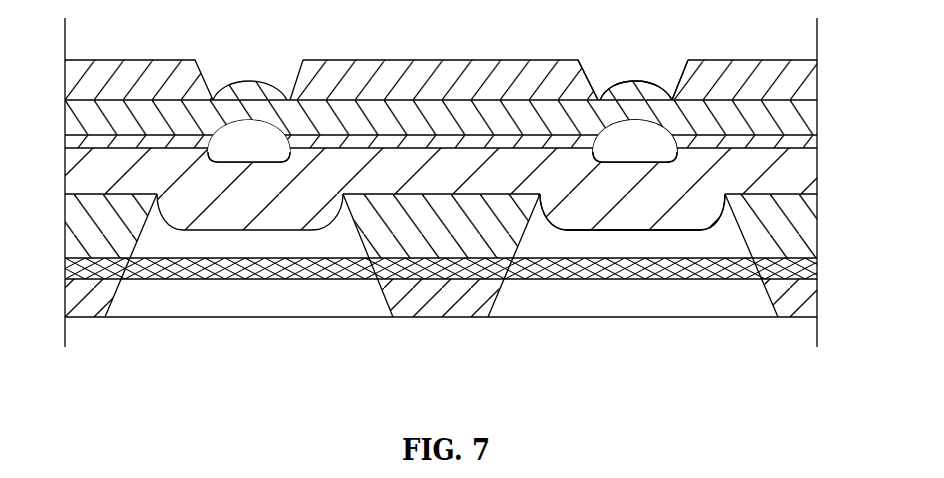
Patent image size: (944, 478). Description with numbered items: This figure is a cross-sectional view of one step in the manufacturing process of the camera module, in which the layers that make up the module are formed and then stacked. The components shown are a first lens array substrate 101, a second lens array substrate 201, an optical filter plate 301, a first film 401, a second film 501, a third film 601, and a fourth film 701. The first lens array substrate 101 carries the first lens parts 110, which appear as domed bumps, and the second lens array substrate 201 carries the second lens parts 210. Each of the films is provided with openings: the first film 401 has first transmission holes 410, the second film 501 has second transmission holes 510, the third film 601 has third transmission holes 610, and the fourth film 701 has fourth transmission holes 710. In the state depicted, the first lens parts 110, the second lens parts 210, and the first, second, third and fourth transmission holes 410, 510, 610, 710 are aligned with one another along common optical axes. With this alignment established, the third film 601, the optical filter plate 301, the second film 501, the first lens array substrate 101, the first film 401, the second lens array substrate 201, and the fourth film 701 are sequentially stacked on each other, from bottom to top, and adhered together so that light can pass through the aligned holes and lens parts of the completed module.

The first lens array substrate 101 is at (810, 185).
The first lens parts 110 is at (604, 210).
The second lens array substrate 201 is at (810, 115).
The second lens parts 210 is at (638, 80).
The optical filter plate 301 is at (820, 268).
The first film 401 is at (810, 148).
The first transmission holes 410 is at (639, 141).
The second film 501 is at (810, 230).
The second transmission holes 510 is at (556, 244).
The third film 601 is at (810, 303).
The third transmission holes 610 is at (260, 294).
The fourth film 701 is at (810, 77).
The fourth transmission holes 710 is at (612, 63).